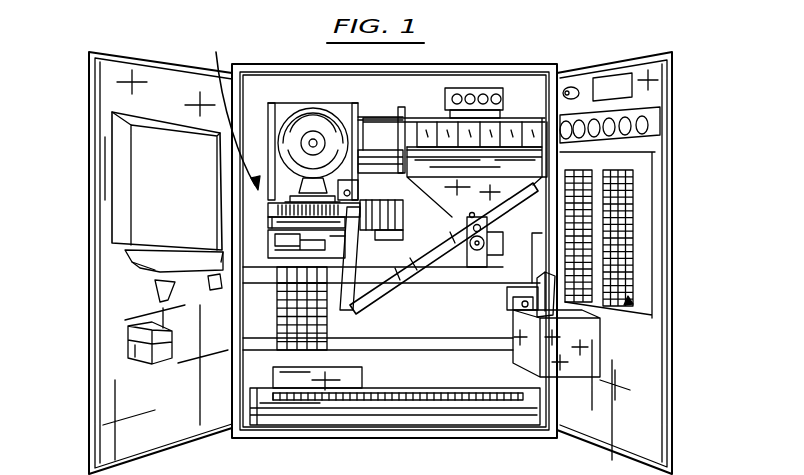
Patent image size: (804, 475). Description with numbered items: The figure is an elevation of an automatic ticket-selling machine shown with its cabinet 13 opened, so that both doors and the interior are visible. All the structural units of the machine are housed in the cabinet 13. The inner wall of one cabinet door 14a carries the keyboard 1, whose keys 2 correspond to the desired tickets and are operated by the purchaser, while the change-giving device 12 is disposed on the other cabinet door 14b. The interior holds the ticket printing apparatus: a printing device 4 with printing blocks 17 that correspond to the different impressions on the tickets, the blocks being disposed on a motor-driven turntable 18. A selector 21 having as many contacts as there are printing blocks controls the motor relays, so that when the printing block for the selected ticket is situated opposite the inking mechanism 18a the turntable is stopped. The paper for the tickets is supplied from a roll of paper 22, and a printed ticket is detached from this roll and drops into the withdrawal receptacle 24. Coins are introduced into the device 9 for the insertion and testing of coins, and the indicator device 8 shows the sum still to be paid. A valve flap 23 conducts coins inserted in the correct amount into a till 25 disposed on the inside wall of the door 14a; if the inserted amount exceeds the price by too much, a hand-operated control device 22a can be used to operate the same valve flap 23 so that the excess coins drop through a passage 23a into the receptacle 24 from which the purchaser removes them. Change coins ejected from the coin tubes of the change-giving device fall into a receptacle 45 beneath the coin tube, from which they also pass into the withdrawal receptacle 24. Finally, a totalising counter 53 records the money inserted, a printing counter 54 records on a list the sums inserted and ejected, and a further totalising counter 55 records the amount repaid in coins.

The keyboard 1 is at (629, 305).
The keys 2 is at (627, 235).
The printing device 4 is at (235, 109).
The indicator device 8 is at (478, 90).
The coin insertion and testing device 9 is at (520, 125).
The change-giving device 12 is at (143, 177).
The cabinet 13 is at (443, 71).
The cabinet door 14a is at (658, 70).
The cabinet door 14b is at (142, 72).
The printing blocks 17 is at (268, 207).
The turntable 18 is at (268, 236).
The inking mechanism 18a is at (380, 207).
The selector 21 is at (268, 193).
The roll of paper 22 is at (313, 117).
The control device 22a is at (568, 88).
The valve flap 23 is at (485, 225).
The passage 23a is at (387, 288).
The withdrawal receptacle 24 is at (137, 348).
The till 25 is at (588, 363).
The receptacle 45 is at (160, 270).
The totalising counter 53 is at (278, 283).
The printing counter 54 is at (507, 303).
The totalising counter 55 is at (213, 283).